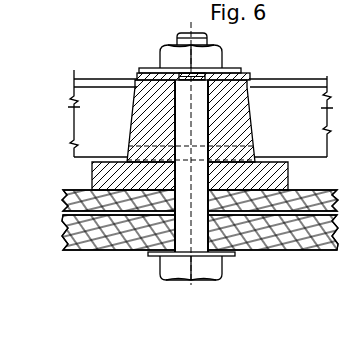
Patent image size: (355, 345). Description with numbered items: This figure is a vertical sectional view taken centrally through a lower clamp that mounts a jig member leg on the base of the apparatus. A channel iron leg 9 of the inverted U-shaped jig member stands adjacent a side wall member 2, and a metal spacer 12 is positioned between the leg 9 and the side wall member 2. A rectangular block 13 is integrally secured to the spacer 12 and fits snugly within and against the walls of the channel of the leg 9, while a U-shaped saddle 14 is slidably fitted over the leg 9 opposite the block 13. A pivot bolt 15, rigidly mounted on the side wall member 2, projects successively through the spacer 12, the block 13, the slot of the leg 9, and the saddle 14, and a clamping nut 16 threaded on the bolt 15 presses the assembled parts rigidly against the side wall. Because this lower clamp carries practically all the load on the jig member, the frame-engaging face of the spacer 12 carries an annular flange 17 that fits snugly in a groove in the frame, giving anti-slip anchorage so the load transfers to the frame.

The side wall member 2 is at (287, 240).
The channel iron leg 9 is at (318, 108).
The metal spacer 12 is at (91, 172).
The rectangular block 13 is at (143, 110).
The saddle 14 is at (248, 70).
The pivot bolt 15 is at (160, 267).
The clamping nut 16 is at (214, 49).
The annular flange 17 is at (66, 193).